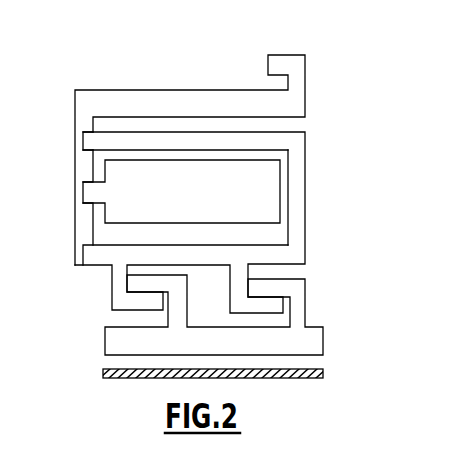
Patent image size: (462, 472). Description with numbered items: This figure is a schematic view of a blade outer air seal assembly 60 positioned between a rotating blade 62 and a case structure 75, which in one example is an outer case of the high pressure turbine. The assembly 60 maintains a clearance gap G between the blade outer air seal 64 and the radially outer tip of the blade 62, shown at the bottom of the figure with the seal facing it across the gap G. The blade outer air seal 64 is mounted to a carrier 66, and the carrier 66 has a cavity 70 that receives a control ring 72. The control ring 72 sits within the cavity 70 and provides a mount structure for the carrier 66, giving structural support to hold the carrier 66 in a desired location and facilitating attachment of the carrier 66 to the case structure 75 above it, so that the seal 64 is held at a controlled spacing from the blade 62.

The blade outer air seal assembly 60 is at (336, 300).
The blade 62 is at (108, 380).
The blade outer air seal 64 is at (117, 338).
The carrier 66 is at (307, 237).
The cavity 70 is at (103, 237).
The control ring 72 is at (265, 187).
The case structure 75 is at (88, 107).
The clearance gap G is at (96, 361).